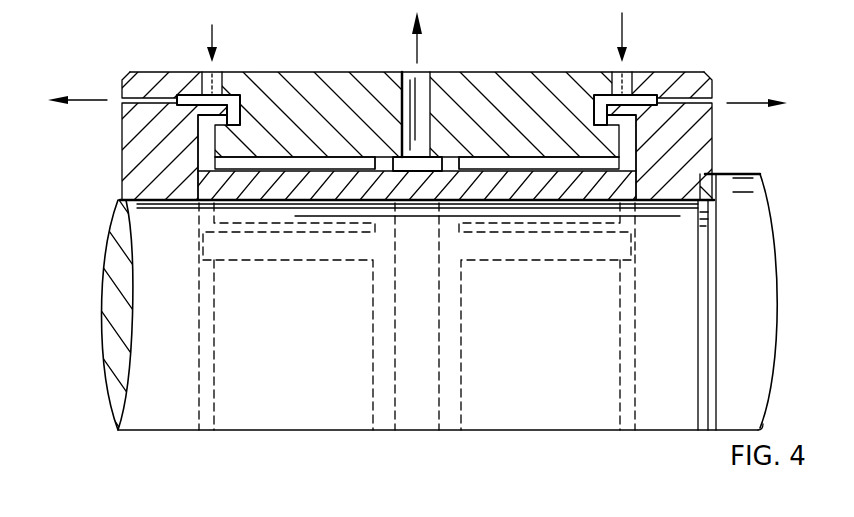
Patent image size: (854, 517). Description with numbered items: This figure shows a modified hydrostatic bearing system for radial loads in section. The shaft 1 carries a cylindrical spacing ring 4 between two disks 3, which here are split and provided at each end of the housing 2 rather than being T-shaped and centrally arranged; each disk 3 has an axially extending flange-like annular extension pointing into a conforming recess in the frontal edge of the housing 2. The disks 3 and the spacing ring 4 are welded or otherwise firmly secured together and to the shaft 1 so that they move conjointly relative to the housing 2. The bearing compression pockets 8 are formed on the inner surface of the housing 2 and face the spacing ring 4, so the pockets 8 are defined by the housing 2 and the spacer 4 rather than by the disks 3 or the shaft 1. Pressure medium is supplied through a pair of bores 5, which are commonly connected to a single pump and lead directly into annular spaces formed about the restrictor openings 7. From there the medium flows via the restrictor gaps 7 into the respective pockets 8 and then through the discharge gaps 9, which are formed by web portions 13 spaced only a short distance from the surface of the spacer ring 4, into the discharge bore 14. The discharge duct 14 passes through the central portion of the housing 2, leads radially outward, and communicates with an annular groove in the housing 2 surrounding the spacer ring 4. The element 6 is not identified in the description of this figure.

The shaft 1 is at (143, 288).
The housing 2 is at (508, 83).
The disk 3 is at (140, 142).
The spacing ring 4 is at (288, 190).
The bores 5 is at (208, 77).
The element 6 is at (490, 507).
The restrictor openings 7 is at (233, 118).
The bearing compression pockets 8 is at (340, 157).
The discharge gaps 9 is at (392, 171).
The web portions 13 is at (392, 160).
The discharge bore 14 is at (425, 80).